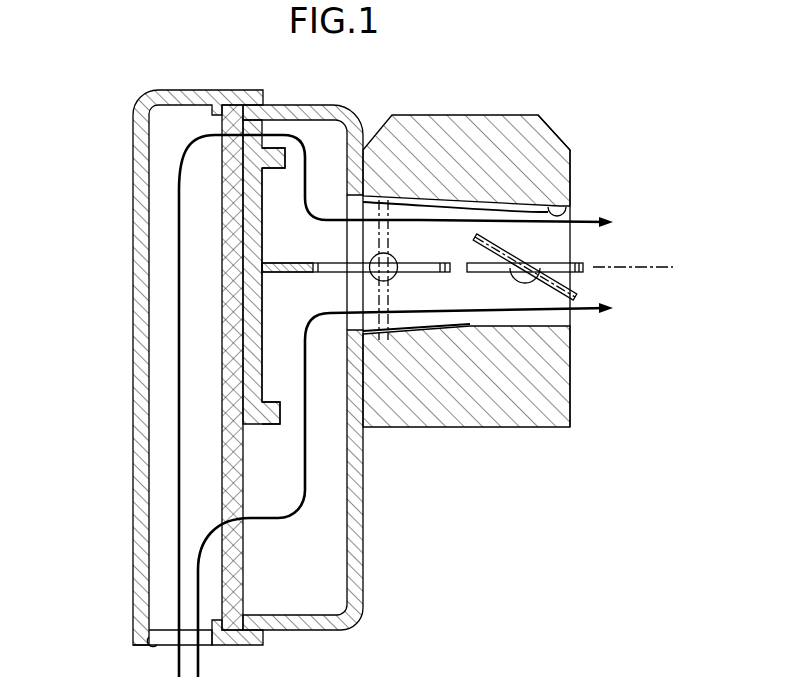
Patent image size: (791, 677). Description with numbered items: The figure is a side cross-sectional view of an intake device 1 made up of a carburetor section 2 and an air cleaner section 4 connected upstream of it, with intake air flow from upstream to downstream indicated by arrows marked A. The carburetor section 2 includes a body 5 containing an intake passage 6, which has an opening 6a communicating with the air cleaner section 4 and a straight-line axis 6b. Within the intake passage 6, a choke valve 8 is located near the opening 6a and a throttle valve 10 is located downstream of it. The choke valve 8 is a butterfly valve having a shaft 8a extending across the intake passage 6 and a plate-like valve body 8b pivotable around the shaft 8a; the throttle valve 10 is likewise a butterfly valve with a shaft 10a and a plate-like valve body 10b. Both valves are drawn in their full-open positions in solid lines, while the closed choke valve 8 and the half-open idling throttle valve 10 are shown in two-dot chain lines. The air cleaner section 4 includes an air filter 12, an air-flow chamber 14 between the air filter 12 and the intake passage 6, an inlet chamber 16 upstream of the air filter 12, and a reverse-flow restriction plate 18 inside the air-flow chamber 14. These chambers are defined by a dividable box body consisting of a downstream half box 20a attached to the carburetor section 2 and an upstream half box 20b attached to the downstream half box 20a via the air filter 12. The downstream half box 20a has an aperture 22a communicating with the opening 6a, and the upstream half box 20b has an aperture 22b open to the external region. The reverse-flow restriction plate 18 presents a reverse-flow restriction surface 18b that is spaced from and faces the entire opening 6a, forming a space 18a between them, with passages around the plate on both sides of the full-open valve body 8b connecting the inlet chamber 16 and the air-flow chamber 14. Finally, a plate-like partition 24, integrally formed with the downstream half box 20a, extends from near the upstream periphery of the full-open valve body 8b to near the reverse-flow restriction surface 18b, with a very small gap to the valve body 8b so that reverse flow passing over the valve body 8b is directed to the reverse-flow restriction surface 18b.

The intake device 1 is at (367, 357).
The carburetor section 2 is at (489, 243).
The air cleaner section 4 is at (328, 357).
The body 5 is at (560, 150).
The intake passage 6 is at (565, 213).
The opening 6a is at (382, 333).
The straight-line axis 6b is at (632, 263).
The choke valve 8 is at (364, 209).
The shaft 8a is at (395, 278).
The plate-like valve body 8b is at (432, 273).
The throttle valve 10 is at (557, 197).
The shaft 10a is at (513, 273).
The plate-like valve body 10b is at (585, 268).
The air filter 12 is at (220, 128).
The air-flow chamber 14 is at (313, 507).
The inlet chamber 16 is at (168, 412).
The reverse-flow restriction plate 18 is at (204, 272).
The space 18a is at (316, 314).
The reverse-flow restriction surface 18b is at (265, 225).
The downstream half box 20a is at (313, 106).
The upstream half box 20b is at (133, 108).
The aperture 22a is at (453, 403).
The aperture 22b is at (157, 640).
The plate-like partition 24 is at (263, 287).